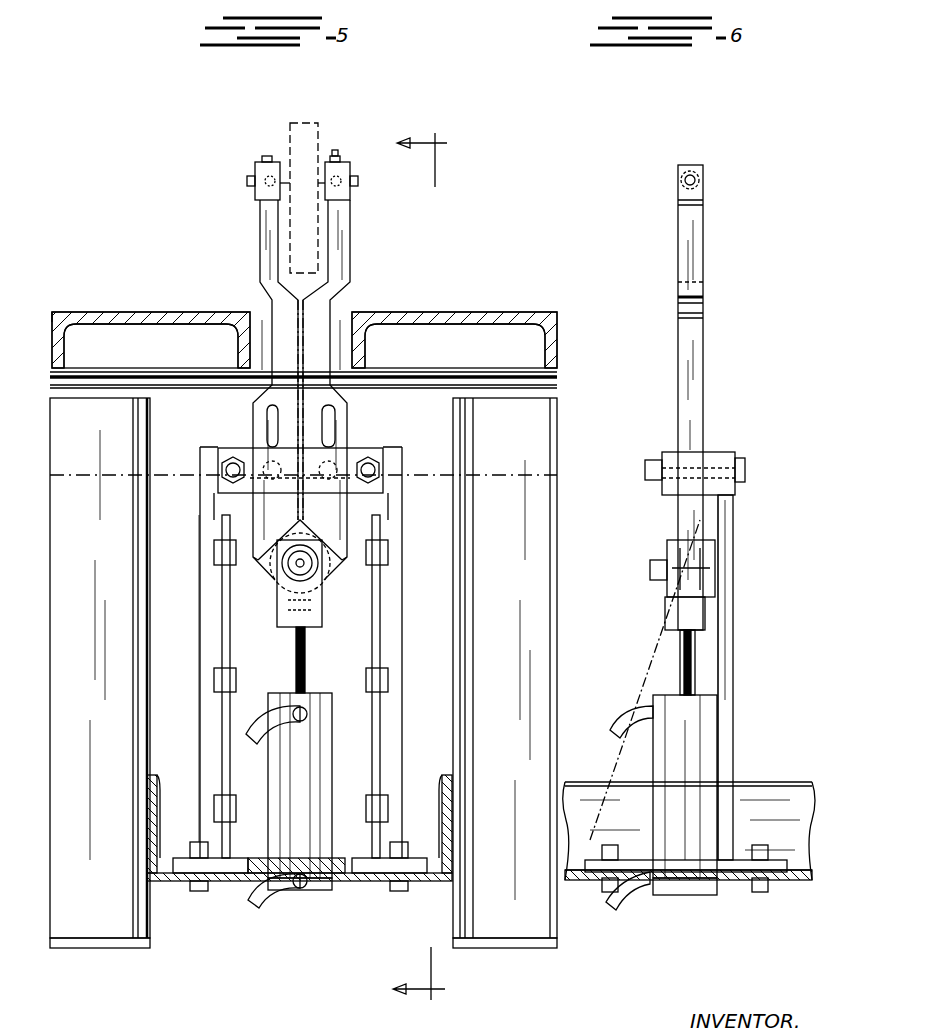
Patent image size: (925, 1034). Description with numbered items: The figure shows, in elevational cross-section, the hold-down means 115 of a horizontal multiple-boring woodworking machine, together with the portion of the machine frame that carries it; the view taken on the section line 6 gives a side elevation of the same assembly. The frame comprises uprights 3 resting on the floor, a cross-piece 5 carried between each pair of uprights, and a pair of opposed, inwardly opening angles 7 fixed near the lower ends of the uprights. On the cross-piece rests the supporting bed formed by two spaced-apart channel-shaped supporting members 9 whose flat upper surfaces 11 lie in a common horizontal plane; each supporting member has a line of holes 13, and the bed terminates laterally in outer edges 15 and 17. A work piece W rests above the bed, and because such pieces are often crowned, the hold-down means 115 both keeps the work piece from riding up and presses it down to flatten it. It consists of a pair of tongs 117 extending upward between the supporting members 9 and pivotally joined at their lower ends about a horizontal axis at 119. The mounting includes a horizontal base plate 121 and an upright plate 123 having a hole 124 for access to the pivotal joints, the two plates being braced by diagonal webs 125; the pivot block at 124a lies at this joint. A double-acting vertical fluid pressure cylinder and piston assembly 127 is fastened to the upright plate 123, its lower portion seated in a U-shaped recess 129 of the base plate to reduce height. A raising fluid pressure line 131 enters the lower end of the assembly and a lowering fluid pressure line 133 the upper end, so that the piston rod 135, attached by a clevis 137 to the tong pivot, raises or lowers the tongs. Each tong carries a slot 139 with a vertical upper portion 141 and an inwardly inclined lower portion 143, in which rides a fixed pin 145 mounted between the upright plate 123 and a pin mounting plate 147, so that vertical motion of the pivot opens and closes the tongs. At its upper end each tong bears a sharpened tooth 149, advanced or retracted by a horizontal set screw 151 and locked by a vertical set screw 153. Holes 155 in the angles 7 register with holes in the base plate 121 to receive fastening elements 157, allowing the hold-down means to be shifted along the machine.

In FIG. 5, the uprights 3 is at (552, 640).
In FIG. 5, the cross-piece 5 is at (420, 466).
In FIG. 5, the section line 6 is at (420, 572).
In FIG. 5, the angles 7 is at (412, 874).
In FIG. 6, the angles 7 is at (768, 794).
In FIG. 5, the supporting members 9 is at (132, 312).
In FIG. 5, the upper surfaces 11 is at (464, 312).
In FIG. 5, the holes 13 is at (95, 324).
In FIG. 5, the outer edge 15 is at (52, 312).
In FIG. 5, the outer edge 17 is at (557, 350).
In FIG. 5, the work piece W is at (300, 126).
In FIG. 5, the hold-down means 115 is at (340, 284).
In FIG. 5, the tongs 117 is at (260, 258).
In FIG. 6, the pivotal axis 119 is at (712, 572).
In FIG. 6, the base plate 121 is at (735, 880).
In FIG. 5, the upright plate 123 is at (388, 620).
In FIG. 6, the upright plate 123 is at (733, 682).
In FIG. 6, the hole 124 is at (733, 540).
In FIG. 5, the pivot block 124a is at (282, 578).
In FIG. 5, the diagonal webs 125 is at (222, 640).
In FIG. 6, the diagonal webs 125 is at (660, 670).
In FIG. 5, the fluid pressure cylinder and piston assembly 127 is at (305, 890).
In FIG. 6, the fluid pressure cylinder and piston assembly 127 is at (670, 816).
In FIG. 5, the U-shaped recess 129 is at (350, 868).
In FIG. 5, the raising fluid pressure line 131 is at (246, 908).
In FIG. 6, the raising fluid pressure line 131 is at (618, 908).
In FIG. 5, the lowering fluid pressure line 133 is at (254, 722).
In FIG. 6, the lowering fluid pressure line 133 is at (631, 722).
In FIG. 5, the piston rod 135 is at (305, 660).
In FIG. 6, the piston rod 135 is at (696, 660).
In FIG. 6, the clevis 137 is at (668, 600).
In FIG. 5, the slot 139 is at (268, 418).
In FIG. 6, the slot 139 is at (700, 420).
In FIG. 5, the upper portion 141 is at (334, 418).
In FIG. 5, the lower portion 143 is at (308, 496).
In FIG. 6, the pin 145 is at (735, 462).
In FIG. 6, the pin mounting plate 147 is at (665, 452).
In FIG. 5, the tooth 149 is at (258, 198).
In FIG. 5, the set screws 151 is at (358, 181).
In FIG. 5, the set screw 153 is at (338, 150).
In FIG. 5, the holes 155 is at (190, 888).
In FIG. 6, the fastening elements 157 is at (768, 890).